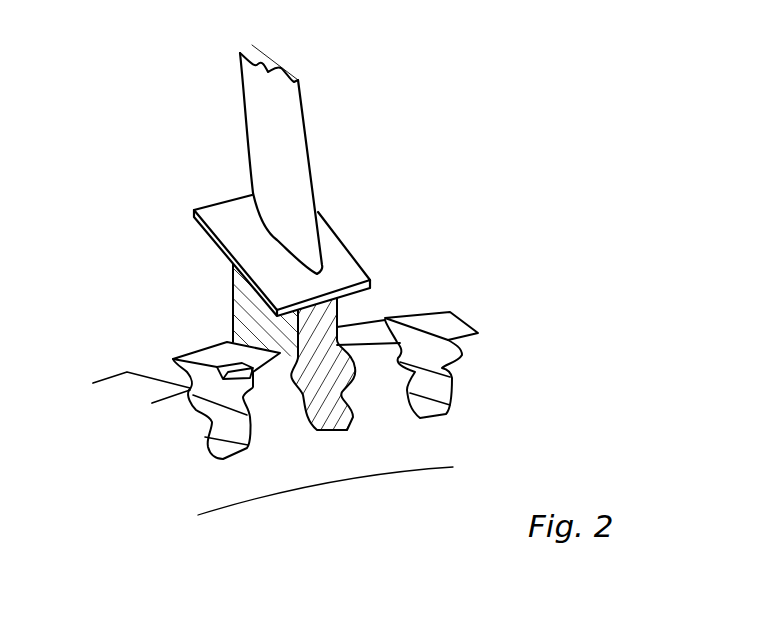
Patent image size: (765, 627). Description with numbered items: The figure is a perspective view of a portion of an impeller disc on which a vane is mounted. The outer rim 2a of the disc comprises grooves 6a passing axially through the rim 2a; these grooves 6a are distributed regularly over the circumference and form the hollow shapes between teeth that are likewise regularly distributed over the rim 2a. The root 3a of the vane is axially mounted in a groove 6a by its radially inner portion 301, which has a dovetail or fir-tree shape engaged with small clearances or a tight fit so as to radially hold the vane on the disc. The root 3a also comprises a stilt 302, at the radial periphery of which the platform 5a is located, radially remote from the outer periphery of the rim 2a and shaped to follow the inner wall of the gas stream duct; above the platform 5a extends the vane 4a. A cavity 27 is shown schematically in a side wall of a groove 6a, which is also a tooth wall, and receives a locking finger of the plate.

The blade airfoil 4a is at (283, 131).
The platform 5a is at (343, 245).
The groove 6a is at (138, 352).
The cavity 27 is at (226, 355).
The outer rim 2a is at (177, 437).
The root 3a is at (458, 354).
The radially inner portion 301 is at (360, 407).
The stilt 302 is at (348, 327).